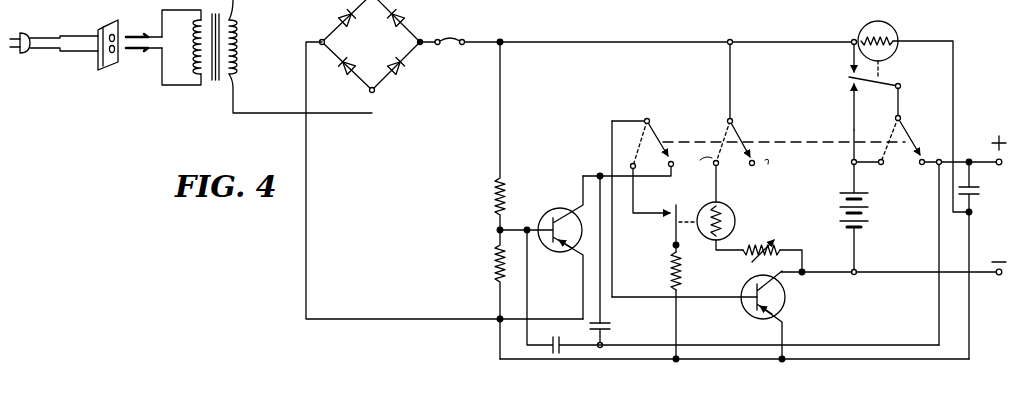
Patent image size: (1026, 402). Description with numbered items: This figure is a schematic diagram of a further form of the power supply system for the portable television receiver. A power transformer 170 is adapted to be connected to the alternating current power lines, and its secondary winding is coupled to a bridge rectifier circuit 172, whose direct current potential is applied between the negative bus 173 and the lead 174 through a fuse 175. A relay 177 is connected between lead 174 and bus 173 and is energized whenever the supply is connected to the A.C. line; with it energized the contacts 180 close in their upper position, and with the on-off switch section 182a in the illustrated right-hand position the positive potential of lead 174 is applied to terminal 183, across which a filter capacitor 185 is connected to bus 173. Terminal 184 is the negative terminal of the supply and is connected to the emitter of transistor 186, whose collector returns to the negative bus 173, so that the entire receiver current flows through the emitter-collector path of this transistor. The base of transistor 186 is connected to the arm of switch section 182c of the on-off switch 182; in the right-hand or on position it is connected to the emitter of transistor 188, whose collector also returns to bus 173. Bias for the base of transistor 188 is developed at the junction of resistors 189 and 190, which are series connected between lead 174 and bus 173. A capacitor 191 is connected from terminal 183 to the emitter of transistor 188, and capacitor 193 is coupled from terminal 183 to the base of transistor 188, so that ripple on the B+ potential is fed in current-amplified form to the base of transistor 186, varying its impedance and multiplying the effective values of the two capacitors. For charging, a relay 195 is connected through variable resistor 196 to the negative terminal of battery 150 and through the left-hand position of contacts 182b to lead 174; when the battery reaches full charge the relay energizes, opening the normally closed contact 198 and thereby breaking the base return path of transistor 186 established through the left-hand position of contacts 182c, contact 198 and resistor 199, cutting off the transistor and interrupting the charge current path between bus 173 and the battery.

The battery 150 is at (866, 236).
The power transformer 170 is at (212, 82).
The bridge rectifier circuit 172 is at (383, 50).
The negative bus 173 is at (398, 319).
The lead 174 is at (555, 42).
The fuse 175 is at (445, 40).
The relay 177 is at (892, 36).
The contacts 180 is at (848, 78).
The on-off switch 182 is at (762, 142).
The on-off switch section 182a is at (910, 160).
The contacts 182b is at (758, 128).
The switch section 182c is at (672, 126).
The terminal 183 is at (996, 158).
The terminal 184 is at (998, 276).
The filter capacitor 185 is at (975, 191).
The transistor 186 is at (786, 298).
The transistor 188 is at (545, 215).
The resistor 189 is at (496, 196).
The resistor 190 is at (496, 268).
The capacitor 191 is at (606, 326).
The capacitor 193 is at (527, 345).
The relay 195 is at (720, 210).
The variable resistor 196 is at (776, 242).
The normally closed contact 198 is at (672, 222).
The resistor 199 is at (682, 262).